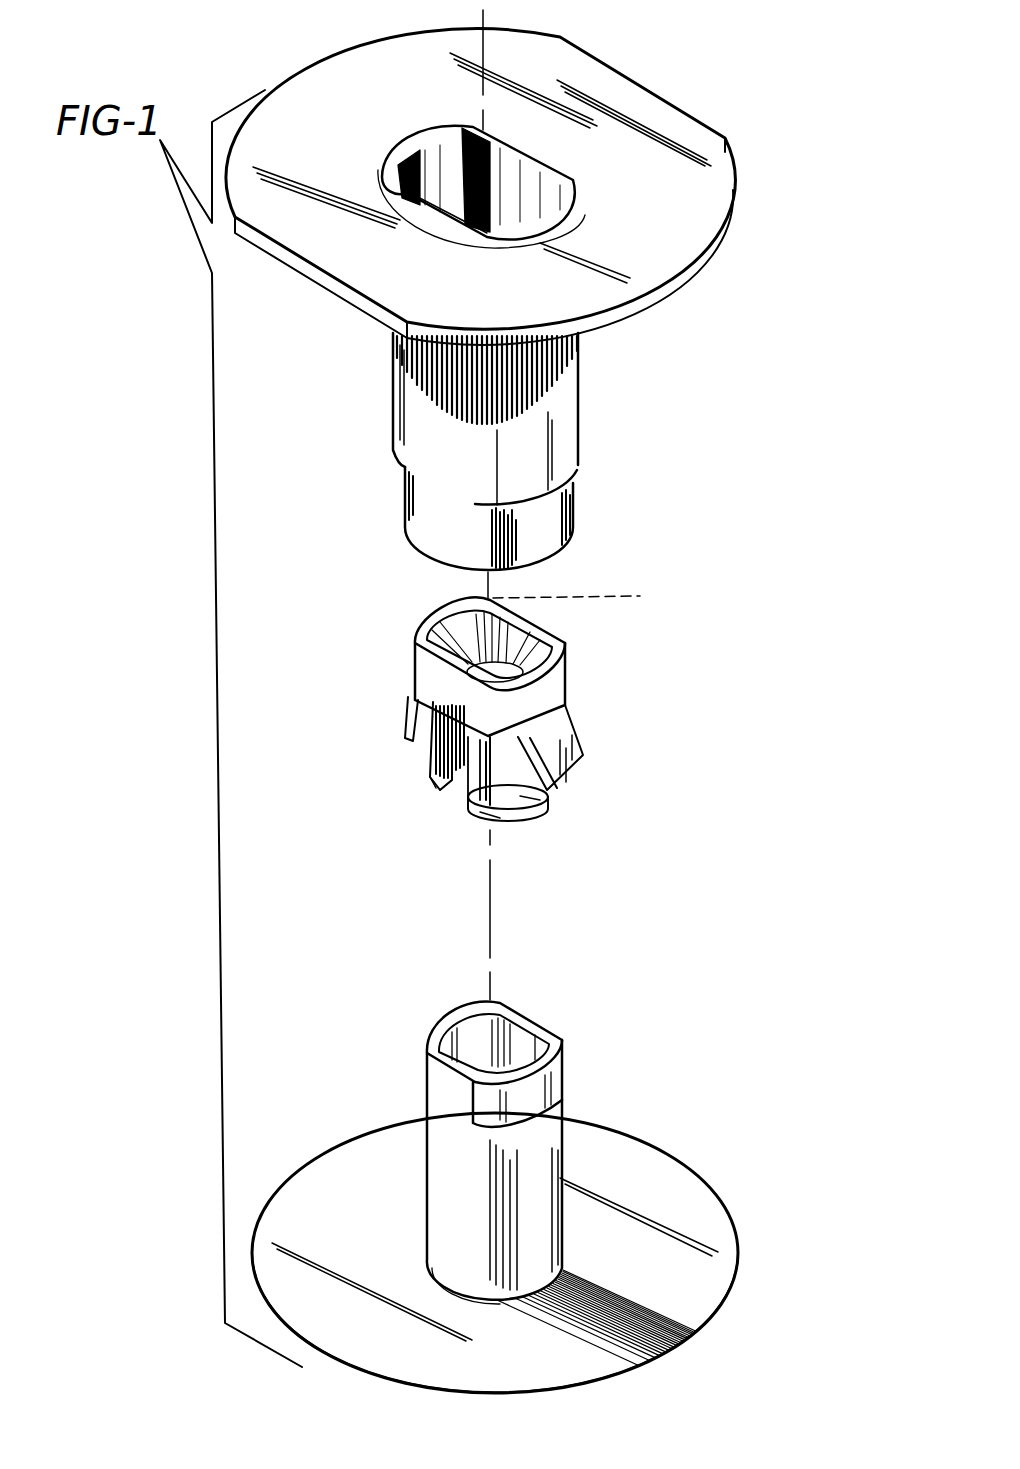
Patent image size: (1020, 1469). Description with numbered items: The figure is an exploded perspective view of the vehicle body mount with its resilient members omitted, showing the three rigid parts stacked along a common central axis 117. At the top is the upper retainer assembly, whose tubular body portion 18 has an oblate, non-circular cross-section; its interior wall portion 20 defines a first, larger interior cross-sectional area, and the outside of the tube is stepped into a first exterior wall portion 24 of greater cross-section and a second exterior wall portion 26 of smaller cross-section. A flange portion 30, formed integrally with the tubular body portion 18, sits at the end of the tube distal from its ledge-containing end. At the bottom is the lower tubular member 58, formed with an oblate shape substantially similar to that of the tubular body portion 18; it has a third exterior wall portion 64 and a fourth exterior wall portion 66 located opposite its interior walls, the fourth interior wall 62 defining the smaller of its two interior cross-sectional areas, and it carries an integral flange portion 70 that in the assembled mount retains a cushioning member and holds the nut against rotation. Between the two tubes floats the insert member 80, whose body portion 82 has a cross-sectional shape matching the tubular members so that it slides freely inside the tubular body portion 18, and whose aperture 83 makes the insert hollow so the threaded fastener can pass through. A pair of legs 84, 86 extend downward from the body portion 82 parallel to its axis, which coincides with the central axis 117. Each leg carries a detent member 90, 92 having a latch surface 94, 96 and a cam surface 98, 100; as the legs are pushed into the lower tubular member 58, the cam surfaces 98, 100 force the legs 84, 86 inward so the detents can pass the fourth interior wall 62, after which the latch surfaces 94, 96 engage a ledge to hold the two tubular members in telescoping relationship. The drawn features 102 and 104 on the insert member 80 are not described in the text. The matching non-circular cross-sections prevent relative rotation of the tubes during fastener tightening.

The tubular body portion 18 is at (393, 418).
The interior wall portion 20 is at (442, 155).
The first exterior wall portion 24 is at (580, 418).
The second exterior wall portion 26 is at (578, 530).
The flange portion 30 is at (688, 205).
The central axis 117 is at (600, 597).
The insert member 80 is at (413, 650).
The body portion 82 is at (430, 688).
The aperture 83 is at (565, 648).
The leg 84 is at (432, 757).
The leg 86 is at (515, 805).
The detent member 90 is at (436, 778).
The detent member 92 is at (492, 805).
The latch surface 94 is at (427, 770).
The latch surface 96 is at (522, 792).
The cam surface 98 is at (440, 790).
The cam surface 100 is at (487, 822).
The locking tab 102 is at (408, 712).
The angled tab 104 is at (565, 738).
The lower tubular member 58 is at (427, 1102).
The fourth interior wall 62 is at (505, 1032).
The third exterior wall portion 64 is at (520, 1200).
The fourth exterior wall portion 66 is at (518, 1085).
The flange portion 70 is at (710, 1265).